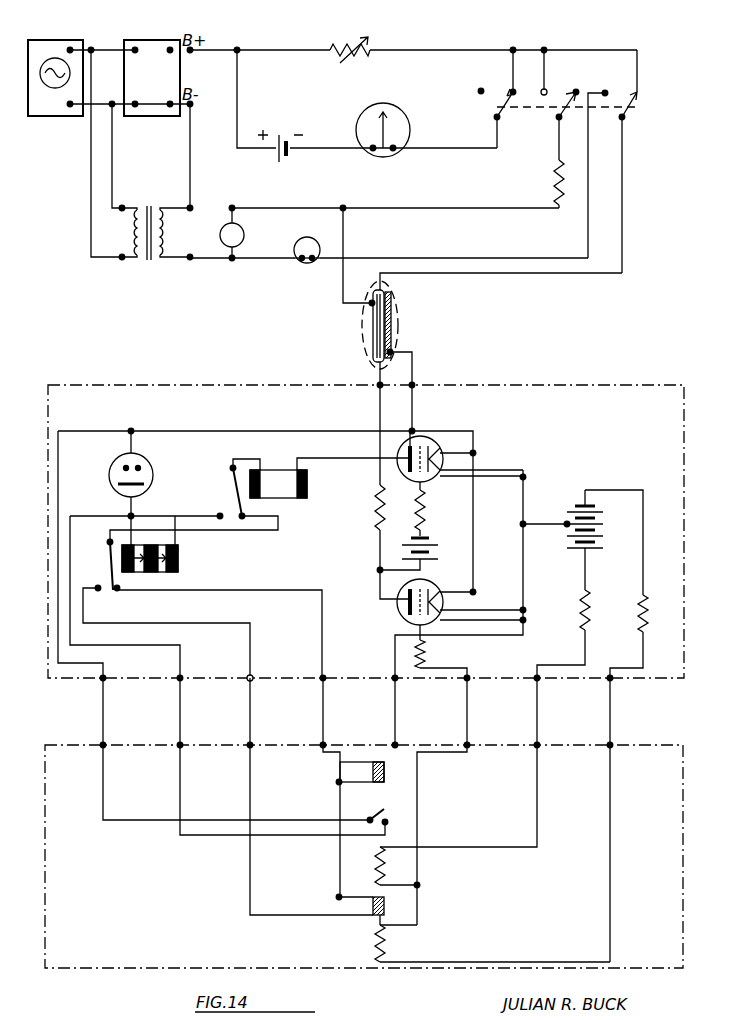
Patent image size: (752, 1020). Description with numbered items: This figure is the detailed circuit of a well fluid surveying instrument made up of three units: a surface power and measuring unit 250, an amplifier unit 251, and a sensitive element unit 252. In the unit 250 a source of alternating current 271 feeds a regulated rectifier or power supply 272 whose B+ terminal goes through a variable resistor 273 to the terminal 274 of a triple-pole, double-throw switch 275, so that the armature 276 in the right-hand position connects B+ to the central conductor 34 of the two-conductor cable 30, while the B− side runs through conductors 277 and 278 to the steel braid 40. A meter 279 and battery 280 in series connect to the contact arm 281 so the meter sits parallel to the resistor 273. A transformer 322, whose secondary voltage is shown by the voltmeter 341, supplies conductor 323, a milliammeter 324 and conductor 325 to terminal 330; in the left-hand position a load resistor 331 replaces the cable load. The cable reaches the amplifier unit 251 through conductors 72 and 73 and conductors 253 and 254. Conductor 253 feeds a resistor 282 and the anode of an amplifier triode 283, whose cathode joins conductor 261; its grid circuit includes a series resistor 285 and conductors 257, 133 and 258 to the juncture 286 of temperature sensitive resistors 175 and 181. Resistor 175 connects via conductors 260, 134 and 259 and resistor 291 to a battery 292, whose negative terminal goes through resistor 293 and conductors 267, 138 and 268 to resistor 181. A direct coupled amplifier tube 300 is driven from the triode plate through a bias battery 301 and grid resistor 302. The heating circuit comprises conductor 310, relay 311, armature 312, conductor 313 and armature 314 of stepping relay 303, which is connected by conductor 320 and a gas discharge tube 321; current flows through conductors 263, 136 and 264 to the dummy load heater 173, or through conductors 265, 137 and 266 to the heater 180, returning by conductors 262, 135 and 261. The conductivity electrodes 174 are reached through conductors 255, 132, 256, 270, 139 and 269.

The power and measuring unit 250 is at (712, 42).
The amplifier unit 251 is at (726, 382).
The sensitive element unit 252 is at (736, 732).
The source of alternating current 271 is at (43, 42).
The regulated rectifier or power supply 272 is at (152, 78).
The variable resistor 273 is at (350, 40).
The terminal 274 is at (635, 107).
The triple-pole, double-throw switch 275 is at (586, 84).
The armature 276 is at (629, 122).
The conductor 277 is at (191, 172).
The conductor 278 is at (284, 207).
The meter 279 is at (404, 117).
The battery 280 is at (279, 133).
The contact arm 281 is at (498, 102).
The transformer 322 is at (150, 262).
The conductor 323 is at (270, 266).
The milliammeter 324 is at (322, 232).
The conductor 325 is at (508, 254).
The terminal 330 is at (628, 84).
The load resistor 331 is at (552, 181).
The voltmeter 341 is at (252, 232).
The central conductor 34 is at (408, 276).
The two-conductor cable 30 is at (364, 326).
The steel braid 40 is at (393, 322).
The conductor 72 is at (416, 376).
The conductor 73 is at (378, 380).
The conductor 253 is at (378, 402).
The conductor 254 is at (413, 418).
The direct coupled amplifier tube 300 is at (433, 445).
The conductor 310 is at (306, 458).
The relay 311 is at (320, 476).
The relay armature 312 is at (232, 476).
The conductor 313 is at (234, 538).
The conductor 320 is at (191, 520).
The gas discharge tube 321 is at (150, 462).
The stepping relay 303 is at (178, 567).
The relay armature 314 is at (104, 578).
The conductor 263 is at (318, 590).
The resistor 282 is at (376, 518).
The series grid resistor 302 is at (430, 500).
The bias battery 301 is at (430, 554).
The amplifier triode 283 is at (400, 612).
The series resistor 285 is at (432, 650).
The conductor 257 is at (468, 670).
The battery 292 is at (578, 500).
The conductor 261 is at (524, 550).
The resistor 291 is at (580, 608).
The resistor 293 is at (640, 618).
The conductor 259 is at (586, 660).
The conductor 267 is at (652, 652).
The conductor 255 is at (92, 670).
The conductor 269 is at (182, 670).
The conductor 265 is at (256, 670).
The conductor 132 is at (104, 698).
The conductor 139 is at (178, 698).
The conductor 137 is at (248, 700).
The conductor 136 is at (320, 700).
The conductor 135 is at (392, 700).
The conductor 133 is at (462, 700).
The conductor 134 is at (537, 700).
The conductor 138 is at (610, 700).
The conductor 256 is at (103, 776).
The conductor 264 is at (320, 754).
The conductor 262 is at (338, 780).
The dummy load heater 173 is at (394, 760).
The conductivity electrodes 174 is at (381, 808).
The conductor 258 is at (424, 790).
The conductor 260 is at (542, 808).
The conductor 268 is at (622, 802).
The conductor 270 is at (284, 840).
The conductor 266 is at (280, 908).
The temperature sensitive electric resistor 175 is at (376, 862).
The juncture 286 is at (424, 888).
The heater 180 is at (395, 894).
The temperature sensitive electric resistor 181 is at (378, 946).